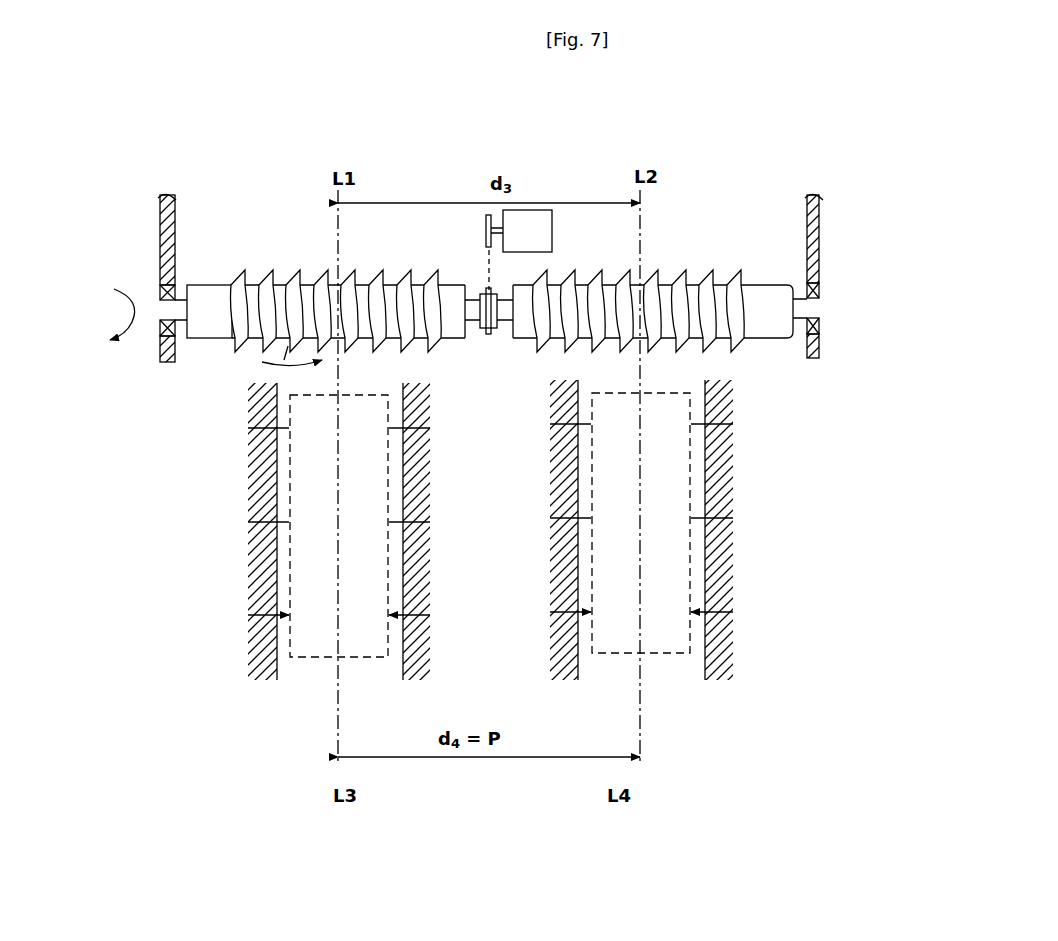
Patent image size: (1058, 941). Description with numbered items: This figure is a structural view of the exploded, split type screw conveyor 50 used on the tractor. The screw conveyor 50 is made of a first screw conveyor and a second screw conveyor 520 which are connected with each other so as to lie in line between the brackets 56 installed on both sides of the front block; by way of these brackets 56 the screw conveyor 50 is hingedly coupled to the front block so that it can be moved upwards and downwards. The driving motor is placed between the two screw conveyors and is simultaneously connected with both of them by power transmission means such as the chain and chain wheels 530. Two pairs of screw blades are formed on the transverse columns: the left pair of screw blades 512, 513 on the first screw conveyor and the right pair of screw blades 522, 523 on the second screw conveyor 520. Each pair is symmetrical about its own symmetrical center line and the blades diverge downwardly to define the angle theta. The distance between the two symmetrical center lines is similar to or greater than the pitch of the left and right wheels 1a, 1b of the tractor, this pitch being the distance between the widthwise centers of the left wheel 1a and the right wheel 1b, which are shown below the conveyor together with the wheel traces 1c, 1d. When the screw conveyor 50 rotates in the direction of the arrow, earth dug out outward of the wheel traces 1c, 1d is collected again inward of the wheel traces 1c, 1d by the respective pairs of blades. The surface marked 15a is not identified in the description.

The screw conveyor 50 is at (304, 274).
The screw blade 512 is at (237, 340).
The screw blade 513 is at (388, 343).
The second screw conveyor 520 is at (658, 259).
The screw blade 522 is at (592, 284).
The screw blade 523 is at (692, 282).
The chain and chain wheels 530 is at (485, 276).
The brackets 56 is at (160, 228).
The screw surface 15a is at (210, 285).
The left wheel 1a is at (312, 657).
The right wheel 1b is at (667, 653).
The wheel trace 1c is at (268, 648).
The wheel trace 1d is at (708, 630).